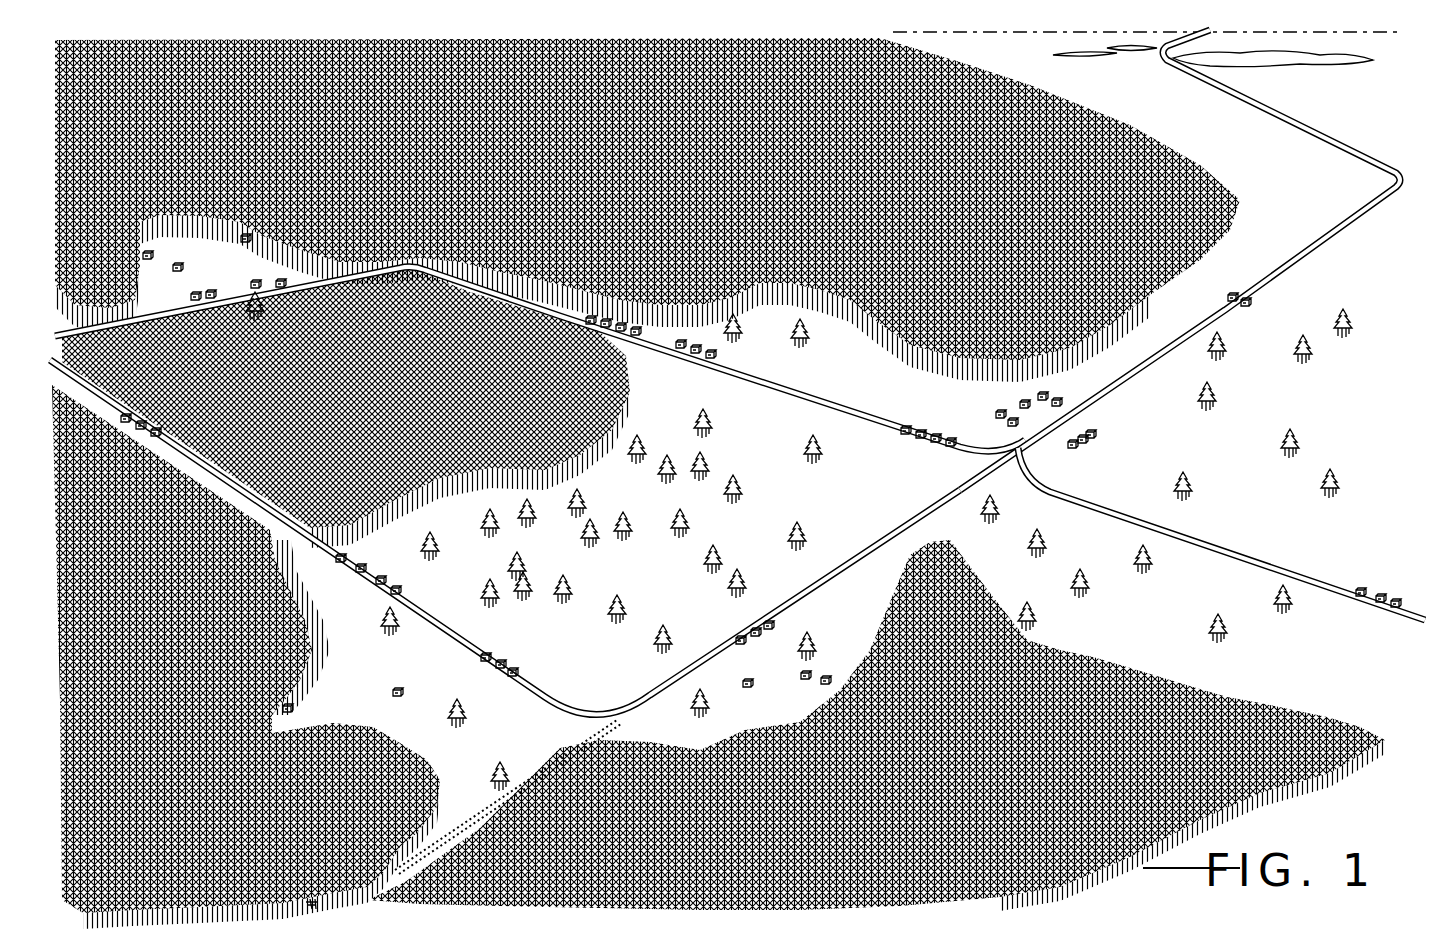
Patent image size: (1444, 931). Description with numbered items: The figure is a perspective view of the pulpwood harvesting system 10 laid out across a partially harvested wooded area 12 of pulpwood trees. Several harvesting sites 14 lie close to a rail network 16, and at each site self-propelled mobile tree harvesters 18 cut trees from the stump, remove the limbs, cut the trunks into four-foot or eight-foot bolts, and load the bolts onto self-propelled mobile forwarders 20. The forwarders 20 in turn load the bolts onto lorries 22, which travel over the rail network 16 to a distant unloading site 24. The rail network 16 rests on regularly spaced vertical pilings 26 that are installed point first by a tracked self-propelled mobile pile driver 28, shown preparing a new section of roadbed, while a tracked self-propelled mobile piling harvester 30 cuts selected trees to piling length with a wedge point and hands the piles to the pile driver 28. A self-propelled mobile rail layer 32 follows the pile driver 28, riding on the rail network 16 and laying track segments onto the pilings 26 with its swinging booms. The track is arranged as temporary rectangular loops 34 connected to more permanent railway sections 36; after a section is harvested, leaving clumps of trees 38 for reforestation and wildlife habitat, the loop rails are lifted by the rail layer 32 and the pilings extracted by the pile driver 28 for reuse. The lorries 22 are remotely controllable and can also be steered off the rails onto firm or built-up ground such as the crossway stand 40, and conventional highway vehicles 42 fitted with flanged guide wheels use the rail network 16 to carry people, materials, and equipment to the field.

The pulpwood harvesting system 10 is at (580, 193).
The wooded area 12 is at (756, 161).
The harvesting sites 14 is at (800, 275).
The rail network 16 is at (810, 404).
The tree harvesters 18 is at (815, 304).
The forwarders 20 is at (730, 322).
The lorries 22 is at (706, 356).
The unloading site 24 is at (1212, 28).
The pilings 26 is at (556, 768).
The pile driver 28 is at (394, 874).
The piling harvester 30 is at (312, 906).
The rail layer 32 is at (1346, 590).
The temporary rectangular loops 34 is at (548, 296).
The permanent railway sections 36 is at (1330, 150).
The clumps of trees 38 is at (1093, 586).
The crossway stand 40 is at (1097, 431).
The highway vehicles 42 is at (1030, 392).